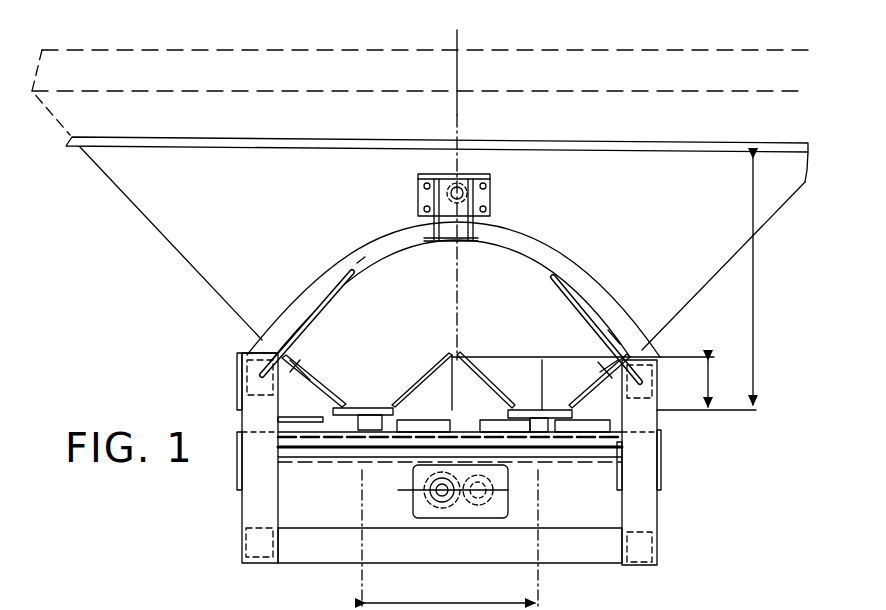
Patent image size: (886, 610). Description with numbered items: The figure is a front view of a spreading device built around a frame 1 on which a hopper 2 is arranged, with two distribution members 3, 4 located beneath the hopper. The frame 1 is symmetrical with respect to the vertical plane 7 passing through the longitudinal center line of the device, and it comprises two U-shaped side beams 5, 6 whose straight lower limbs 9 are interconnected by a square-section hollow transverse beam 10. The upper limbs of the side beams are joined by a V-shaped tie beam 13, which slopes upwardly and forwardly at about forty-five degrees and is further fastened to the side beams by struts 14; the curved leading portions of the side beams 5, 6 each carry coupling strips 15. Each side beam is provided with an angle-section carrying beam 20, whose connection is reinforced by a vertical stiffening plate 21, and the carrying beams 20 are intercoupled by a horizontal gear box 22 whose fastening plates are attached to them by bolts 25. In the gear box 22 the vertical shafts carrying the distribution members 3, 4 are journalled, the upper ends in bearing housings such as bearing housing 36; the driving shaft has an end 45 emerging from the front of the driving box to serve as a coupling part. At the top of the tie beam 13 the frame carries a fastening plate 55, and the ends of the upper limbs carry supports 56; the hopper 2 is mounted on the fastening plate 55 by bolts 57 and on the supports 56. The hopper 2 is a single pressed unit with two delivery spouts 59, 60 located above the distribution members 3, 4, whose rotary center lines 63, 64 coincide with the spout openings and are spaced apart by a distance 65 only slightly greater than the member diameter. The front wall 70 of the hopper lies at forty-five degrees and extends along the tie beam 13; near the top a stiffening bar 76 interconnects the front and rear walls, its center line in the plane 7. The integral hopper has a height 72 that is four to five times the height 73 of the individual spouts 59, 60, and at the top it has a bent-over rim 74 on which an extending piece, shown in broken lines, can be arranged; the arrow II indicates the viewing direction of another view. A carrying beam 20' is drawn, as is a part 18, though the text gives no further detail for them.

The frame 1 is at (238, 398).
The hopper 2 is at (200, 205).
The distribution member 3 is at (316, 411).
The distribution member 4 is at (590, 460).
The side beam 5 is at (242, 516).
The side beam 6 is at (645, 517).
The vertical plane 7 is at (456, 66).
The lower limb 9 is at (250, 566).
The transverse beam 10 is at (328, 553).
The tie beam 13 is at (531, 254).
The strut 14 is at (332, 289).
The coupling strip 15 is at (260, 488).
The drive shaft 18 is at (500, 490).
The carrying beam 20 is at (682, 462).
The frame rail 20' is at (213, 421).
The stiffening plate 21 is at (660, 426).
The gear box 22 is at (321, 462).
The bolt 25 is at (586, 72).
The bearing housing 36 is at (451, 236).
The end of driving shaft 45 is at (400, 491).
The fastening plate 55 is at (418, 192).
The support 56 is at (300, 362).
The bolt 57 is at (490, 186).
The delivery spout 59 is at (399, 381).
The delivery spout 60 is at (500, 385).
The center line 63 is at (365, 407).
The center line 64 is at (541, 371).
The distance 65 is at (463, 601).
The front wall 70 is at (233, 249).
The height 72 is at (752, 273).
The height 73 is at (712, 392).
The bent-over rim 74 is at (248, 141).
The stiffening bar 76 is at (470, 171).
The viewing direction of FIG. 2 II is at (797, 311).